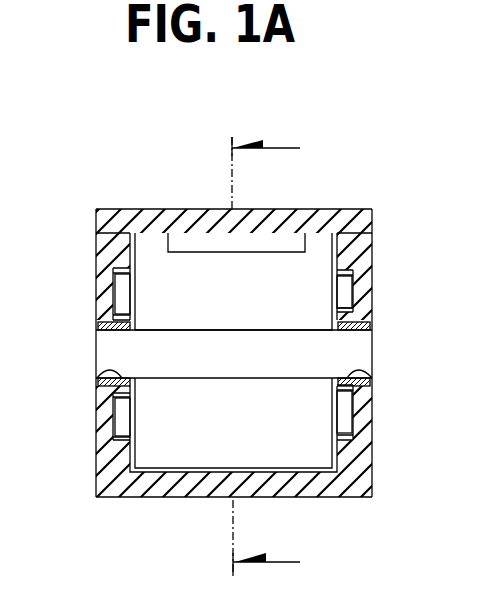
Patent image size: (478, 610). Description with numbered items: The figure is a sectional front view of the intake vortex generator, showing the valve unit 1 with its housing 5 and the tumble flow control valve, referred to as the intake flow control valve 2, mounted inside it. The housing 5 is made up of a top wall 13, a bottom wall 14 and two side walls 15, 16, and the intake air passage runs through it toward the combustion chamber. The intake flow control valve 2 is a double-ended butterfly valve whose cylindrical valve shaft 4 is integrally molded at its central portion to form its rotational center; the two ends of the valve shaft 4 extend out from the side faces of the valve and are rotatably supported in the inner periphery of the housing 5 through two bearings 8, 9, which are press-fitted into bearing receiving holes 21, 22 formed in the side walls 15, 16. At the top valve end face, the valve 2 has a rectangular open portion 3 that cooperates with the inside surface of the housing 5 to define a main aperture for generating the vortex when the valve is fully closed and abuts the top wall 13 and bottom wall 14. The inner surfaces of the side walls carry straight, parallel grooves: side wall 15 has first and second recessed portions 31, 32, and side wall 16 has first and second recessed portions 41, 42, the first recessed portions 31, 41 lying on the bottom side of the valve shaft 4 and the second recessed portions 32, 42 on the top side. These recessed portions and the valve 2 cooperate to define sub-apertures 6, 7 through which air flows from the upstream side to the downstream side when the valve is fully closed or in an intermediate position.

The valve unit 1 is at (90, 180).
The intake flow control valve 2 is at (345, 208).
The open portion 3 is at (189, 245).
The valve shaft 4 is at (205, 380).
The housing 5 is at (143, 196).
The sub-aperture 6 is at (118, 300).
The sub-aperture 7 is at (347, 300).
The bearing 8 is at (98, 326).
The bearing 9 is at (372, 327).
The top wall 13 is at (213, 208).
The bottom wall 14 is at (287, 490).
The side wall 15 is at (115, 254).
The side wall 16 is at (362, 260).
The bearing receiving hole 21 is at (97, 378).
The bearing receiving hole 22 is at (373, 378).
The first recessed portion 31 is at (118, 410).
The second recessed portion 32 is at (118, 291).
The first recessed portion 41 is at (350, 420).
The second recessed portion 42 is at (350, 295).